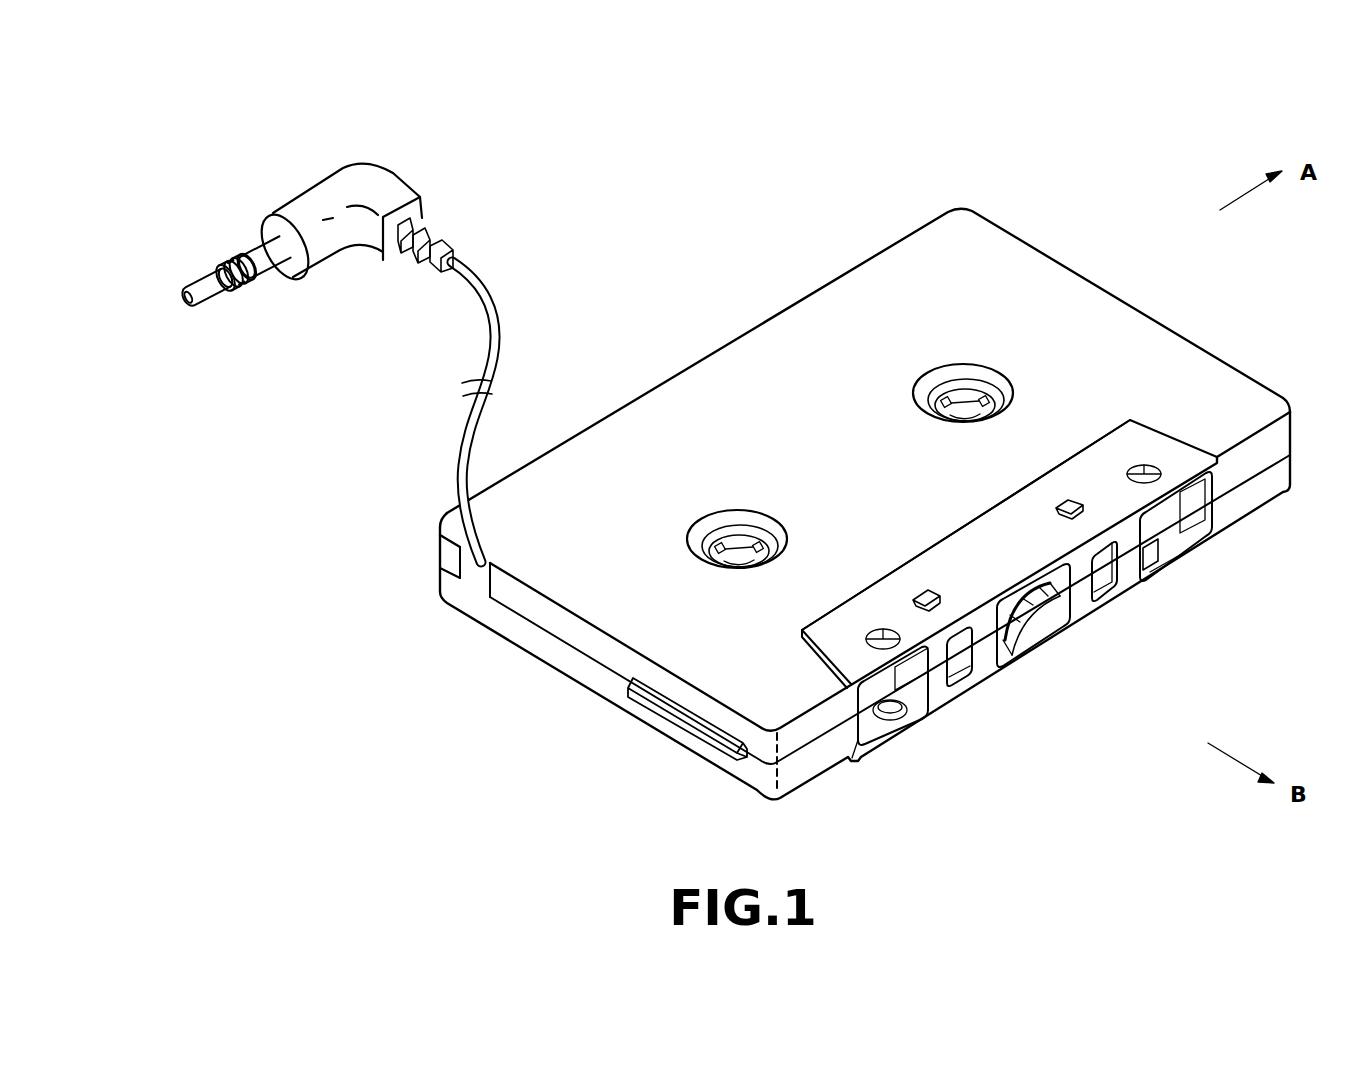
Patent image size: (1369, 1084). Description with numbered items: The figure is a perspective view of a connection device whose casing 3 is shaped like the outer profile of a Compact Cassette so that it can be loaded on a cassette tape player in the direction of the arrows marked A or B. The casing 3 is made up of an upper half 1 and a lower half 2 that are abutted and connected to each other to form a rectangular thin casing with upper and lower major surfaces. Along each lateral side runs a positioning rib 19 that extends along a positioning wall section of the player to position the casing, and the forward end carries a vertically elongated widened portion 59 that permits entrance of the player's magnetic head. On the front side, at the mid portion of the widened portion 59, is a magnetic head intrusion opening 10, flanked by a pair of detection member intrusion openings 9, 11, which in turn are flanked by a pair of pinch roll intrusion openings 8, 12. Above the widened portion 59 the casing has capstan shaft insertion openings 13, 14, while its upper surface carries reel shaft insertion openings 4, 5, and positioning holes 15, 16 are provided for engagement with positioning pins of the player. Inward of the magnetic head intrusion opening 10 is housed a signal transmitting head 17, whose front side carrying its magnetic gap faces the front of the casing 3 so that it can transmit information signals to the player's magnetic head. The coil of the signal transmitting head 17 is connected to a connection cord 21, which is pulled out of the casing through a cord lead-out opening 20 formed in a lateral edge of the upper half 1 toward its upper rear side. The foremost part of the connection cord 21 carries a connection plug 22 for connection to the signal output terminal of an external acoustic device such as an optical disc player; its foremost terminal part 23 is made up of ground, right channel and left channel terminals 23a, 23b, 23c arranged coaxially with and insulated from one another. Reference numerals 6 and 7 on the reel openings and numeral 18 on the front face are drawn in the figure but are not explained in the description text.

The upper half 1 is at (1150, 332).
The lower half 2 is at (1263, 490).
The casing 3 is at (992, 218).
The reel shaft insertion opening 4 is at (932, 378).
The reel shaft insertion opening 5 is at (723, 508).
The reel hub 6 is at (967, 397).
The reel hub 7 is at (743, 537).
The pinch roll intrusion opening 8 is at (867, 730).
The detection member intrusion opening 9 is at (960, 673).
The magnetic head intrusion opening 10 is at (1000, 657).
The detection member intrusion opening 11 is at (1102, 590).
The pinch roll intrusion opening 12 is at (1153, 555).
The capstan shaft insertion opening 13 is at (900, 713).
The capstan shaft insertion opening 14 is at (1137, 467).
The positioning hole 15 is at (933, 590).
The positioning hole 16 is at (1058, 510).
The signal transmitting head 17 is at (1030, 653).
The opening 18 is at (1213, 543).
The positioning rib 19 is at (673, 718).
The cord lead-out opening 20 is at (497, 560).
The connection cord 21 is at (492, 358).
The connection plug 22 is at (367, 178).
The foremost terminal part 23 is at (214, 247).
The terminal 23a is at (263, 258).
The terminal 23b is at (236, 272).
The terminal 23c is at (207, 287).
The widened portion 59 is at (1080, 460).